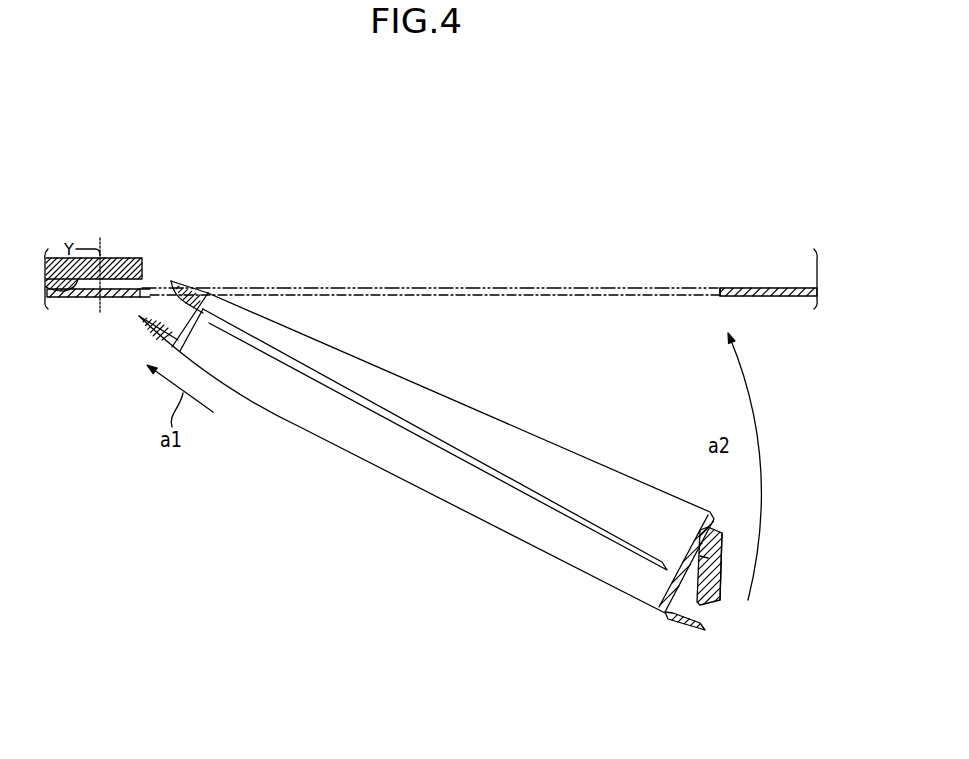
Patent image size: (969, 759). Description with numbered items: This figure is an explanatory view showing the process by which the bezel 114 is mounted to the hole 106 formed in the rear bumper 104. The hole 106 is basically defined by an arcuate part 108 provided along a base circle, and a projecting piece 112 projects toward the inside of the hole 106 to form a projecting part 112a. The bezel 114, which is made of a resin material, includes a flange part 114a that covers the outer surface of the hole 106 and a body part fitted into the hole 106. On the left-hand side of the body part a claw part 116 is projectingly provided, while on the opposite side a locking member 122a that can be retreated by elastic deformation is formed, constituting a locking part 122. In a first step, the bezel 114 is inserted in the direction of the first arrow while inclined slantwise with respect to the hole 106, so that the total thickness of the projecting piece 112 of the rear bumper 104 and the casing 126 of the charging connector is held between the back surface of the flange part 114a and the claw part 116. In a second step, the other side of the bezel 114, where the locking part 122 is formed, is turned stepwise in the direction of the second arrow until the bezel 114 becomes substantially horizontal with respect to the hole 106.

The rear bumper 104 is at (779, 287).
The hole 106 is at (560, 296).
The arcuate part 108 is at (714, 286).
The projecting piece 112 is at (127, 298).
The projecting part 112a is at (147, 288).
The bezel 114 is at (505, 398).
The flange part 114a is at (143, 328).
The claw part 116 is at (200, 278).
The locking part 122 is at (714, 632).
The locking member 122a is at (723, 594).
The casing 126 is at (121, 266).